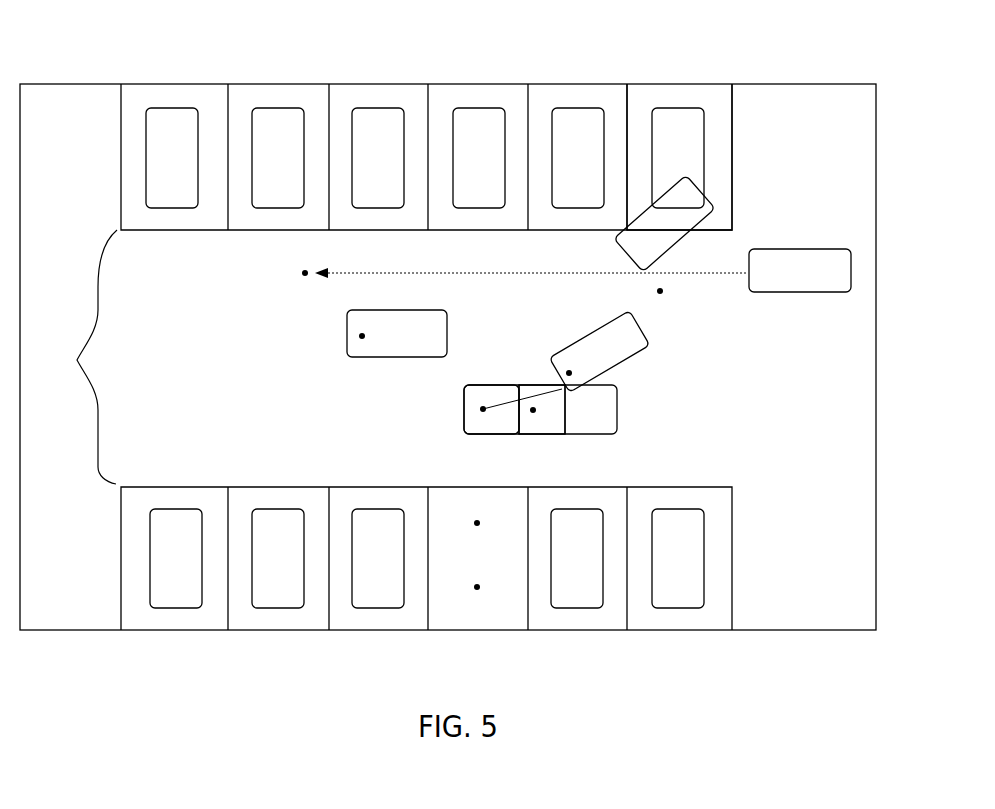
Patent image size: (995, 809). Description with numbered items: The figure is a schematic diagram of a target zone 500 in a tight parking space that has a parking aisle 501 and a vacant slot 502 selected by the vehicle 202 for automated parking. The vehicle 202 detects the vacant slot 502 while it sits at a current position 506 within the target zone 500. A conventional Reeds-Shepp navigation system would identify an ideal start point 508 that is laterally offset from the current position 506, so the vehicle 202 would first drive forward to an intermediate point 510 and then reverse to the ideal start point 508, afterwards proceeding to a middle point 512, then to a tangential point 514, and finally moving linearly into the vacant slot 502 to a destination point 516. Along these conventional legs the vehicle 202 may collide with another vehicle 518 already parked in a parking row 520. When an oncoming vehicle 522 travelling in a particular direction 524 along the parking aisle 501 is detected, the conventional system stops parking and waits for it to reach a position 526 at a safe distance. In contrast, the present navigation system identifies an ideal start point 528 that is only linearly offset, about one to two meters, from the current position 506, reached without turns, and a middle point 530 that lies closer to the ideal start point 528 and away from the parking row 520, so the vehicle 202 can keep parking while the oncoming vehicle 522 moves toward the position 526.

The target zone 500 is at (97, 102).
The parking aisle 501 is at (78, 357).
The vacant slot 502 is at (452, 617).
The current position 506 is at (531, 411).
The ideal start point 508 is at (358, 336).
The intermediate point 510 is at (662, 294).
The middle point 512 is at (636, 246).
The tangential point 514 is at (480, 526).
The destination point 516 is at (480, 590).
The another vehicle 518 is at (705, 148).
The parking row 520 is at (742, 192).
The oncoming vehicle 522 is at (761, 293).
The particular direction 524 is at (500, 276).
The position 526 is at (302, 274).
The ideal start point 528 is at (480, 409).
The middle point 530 is at (566, 372).
The vehicle 202 is at (619, 409).